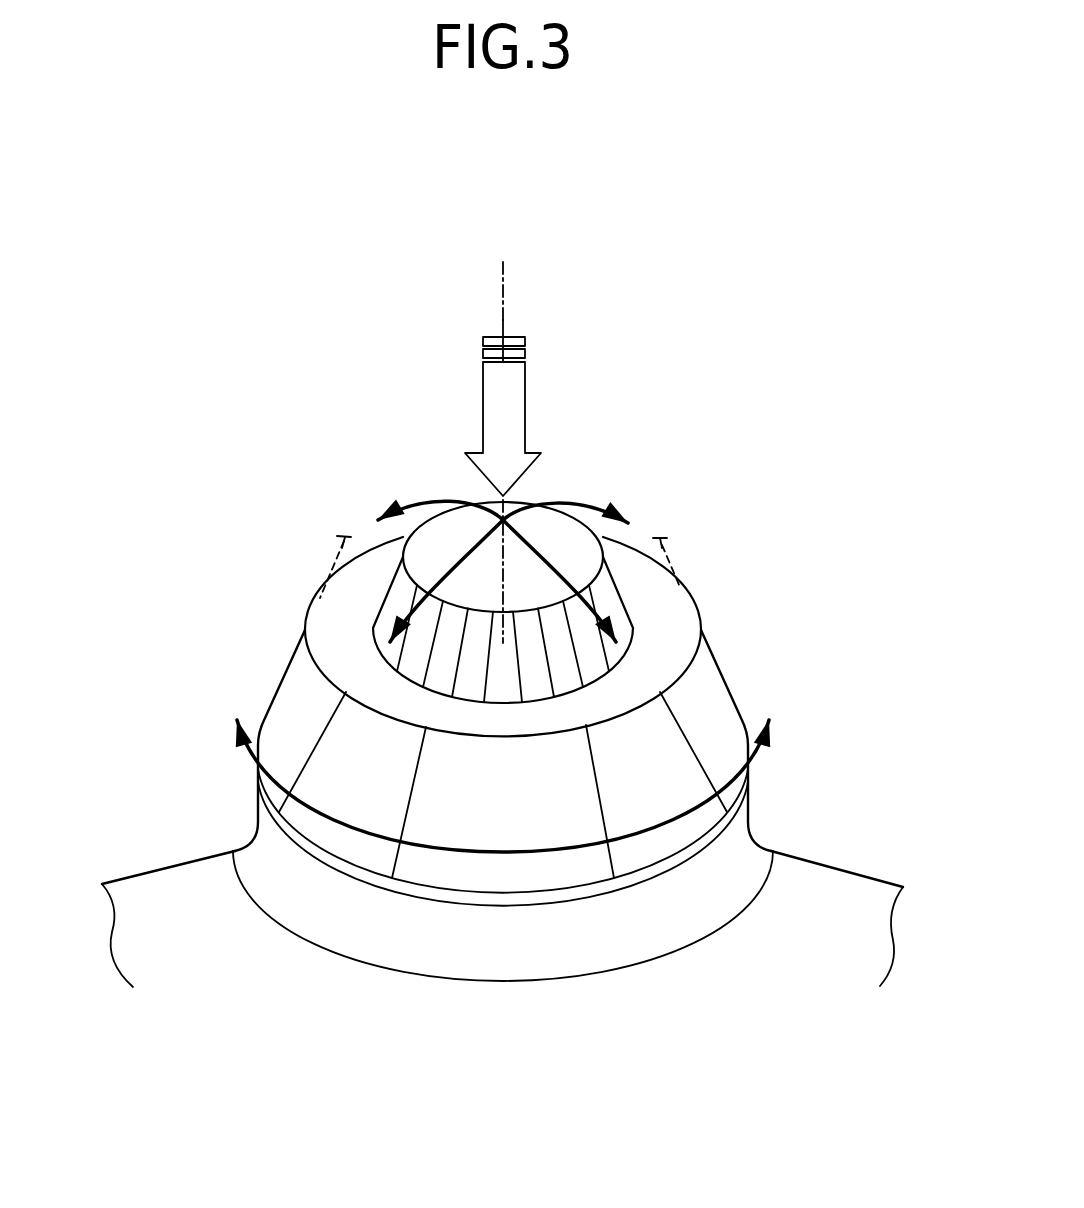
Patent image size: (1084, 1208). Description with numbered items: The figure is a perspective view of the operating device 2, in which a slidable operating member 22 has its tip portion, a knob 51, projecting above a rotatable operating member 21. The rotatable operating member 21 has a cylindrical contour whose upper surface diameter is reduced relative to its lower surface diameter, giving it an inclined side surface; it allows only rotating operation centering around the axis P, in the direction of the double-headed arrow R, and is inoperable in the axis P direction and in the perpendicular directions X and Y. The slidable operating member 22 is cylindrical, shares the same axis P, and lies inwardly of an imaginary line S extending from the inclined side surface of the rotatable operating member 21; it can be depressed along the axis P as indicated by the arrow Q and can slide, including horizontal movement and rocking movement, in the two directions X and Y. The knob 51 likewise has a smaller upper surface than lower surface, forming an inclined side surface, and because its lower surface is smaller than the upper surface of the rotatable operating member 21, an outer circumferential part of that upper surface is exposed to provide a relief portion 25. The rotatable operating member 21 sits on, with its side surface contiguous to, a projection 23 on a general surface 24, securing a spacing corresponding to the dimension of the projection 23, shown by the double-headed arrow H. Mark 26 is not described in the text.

The operating device 2 is at (555, 725).
The rotatable operating member 21 is at (716, 664).
The slidable operating member 22 is at (620, 583).
The projection 23 is at (752, 834).
The general surface 24 is at (850, 870).
The relief portion 25 is at (350, 650).
The mark 26 is at (672, 557).
The knob 51 is at (505, 563).
The axis P is at (504, 424).
The arrow Q is at (522, 424).
The direction X is at (428, 504).
The direction Y is at (575, 504).
The double-headed arrow R is at (353, 829).
The imaginary line S is at (333, 556).
The double-headed arrow H is at (504, 912).